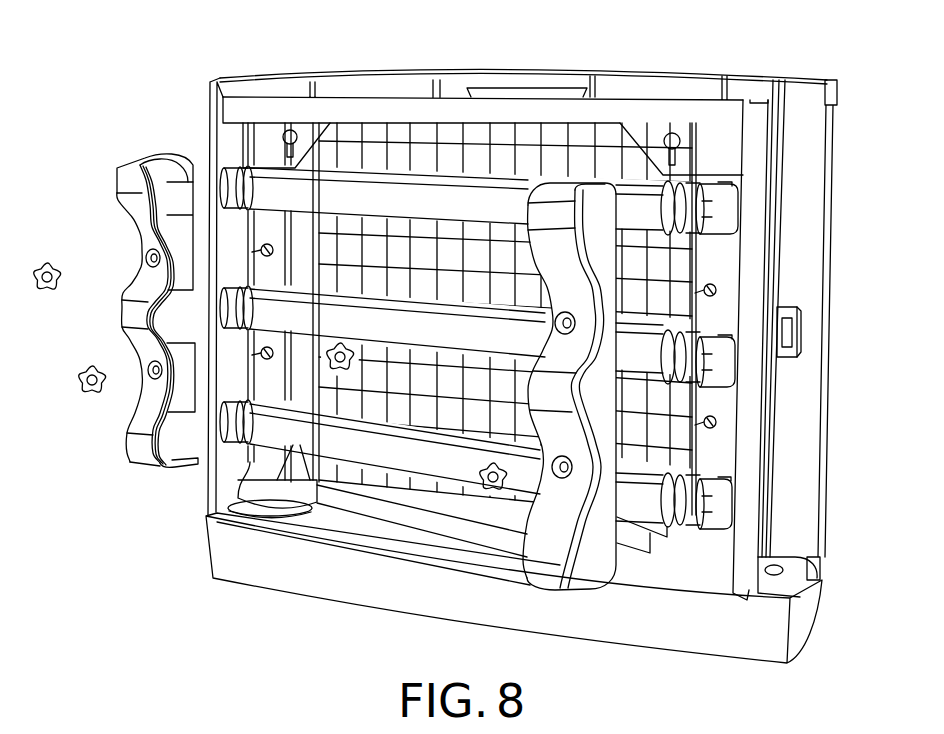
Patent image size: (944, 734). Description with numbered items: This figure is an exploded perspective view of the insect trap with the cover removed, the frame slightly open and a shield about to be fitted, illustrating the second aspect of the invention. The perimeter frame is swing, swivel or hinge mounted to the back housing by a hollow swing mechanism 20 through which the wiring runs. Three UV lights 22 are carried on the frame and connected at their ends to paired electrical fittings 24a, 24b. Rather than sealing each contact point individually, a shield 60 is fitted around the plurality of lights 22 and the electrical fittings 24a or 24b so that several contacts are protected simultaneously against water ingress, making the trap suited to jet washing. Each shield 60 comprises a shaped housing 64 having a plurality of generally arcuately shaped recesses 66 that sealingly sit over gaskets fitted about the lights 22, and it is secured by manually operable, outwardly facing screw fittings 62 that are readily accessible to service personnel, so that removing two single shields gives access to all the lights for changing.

The swing mechanism 20 is at (275, 108).
The UV lights 22 is at (472, 170).
The electrical fitting 24a is at (730, 209).
The electrical fitting 24b is at (225, 183).
The shield 60 is at (553, 580).
The screw fitting 62 is at (457, 482).
The shaped housing 64 is at (172, 465).
The arcuately shaped recess 66 is at (155, 182).